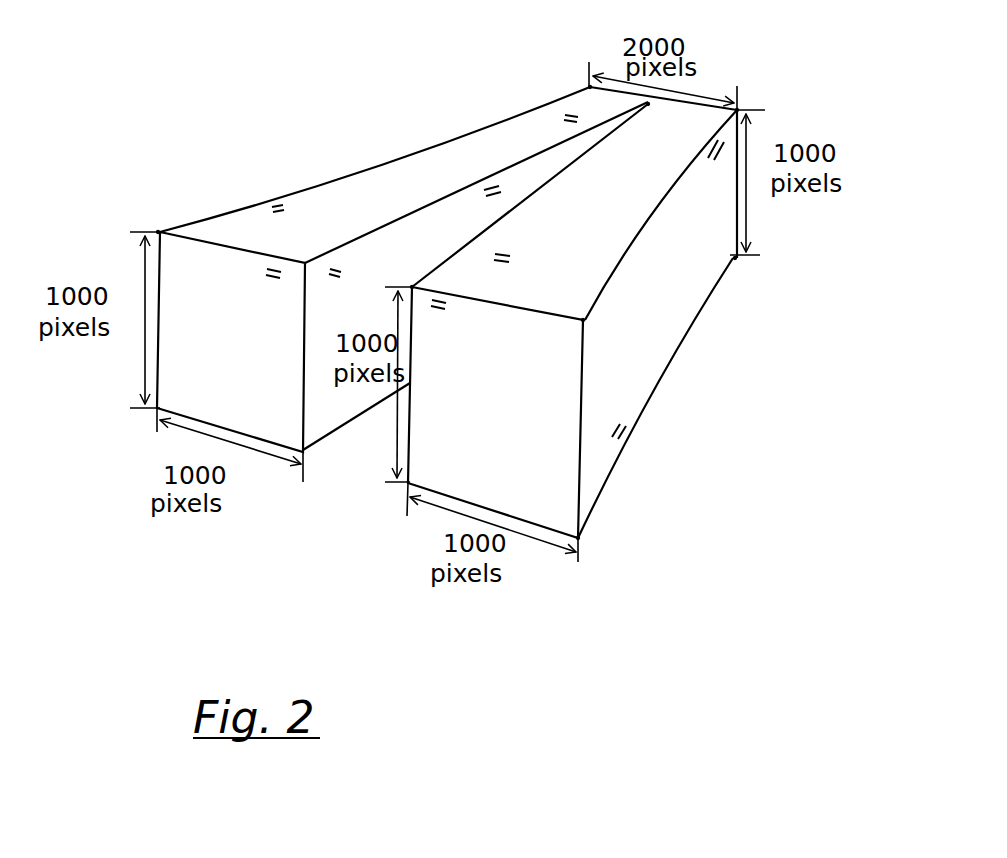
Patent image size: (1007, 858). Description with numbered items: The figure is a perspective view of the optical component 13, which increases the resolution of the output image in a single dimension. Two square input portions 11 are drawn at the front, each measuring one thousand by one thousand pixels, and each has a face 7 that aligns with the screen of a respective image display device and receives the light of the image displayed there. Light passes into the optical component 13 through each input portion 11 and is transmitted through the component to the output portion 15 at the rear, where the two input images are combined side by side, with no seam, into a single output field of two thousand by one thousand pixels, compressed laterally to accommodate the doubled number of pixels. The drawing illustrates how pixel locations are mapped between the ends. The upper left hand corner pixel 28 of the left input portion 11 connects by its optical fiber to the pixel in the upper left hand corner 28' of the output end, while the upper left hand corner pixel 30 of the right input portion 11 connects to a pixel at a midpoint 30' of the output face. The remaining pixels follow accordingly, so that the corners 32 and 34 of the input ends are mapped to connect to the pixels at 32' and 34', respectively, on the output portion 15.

The face 7 is at (233, 278).
The input portion 11 is at (205, 230).
The optical component 13 is at (388, 180).
The output portion 15 is at (726, 250).
The upper left hand corner pixel 28 is at (109, 205).
The upper left hand corner pixel 30 is at (468, 279).
The corner 32 is at (688, 351).
The corner 34 is at (642, 571).
The upper left hand corner pixel of output end 28' is at (544, 55).
The midpoint pixel of output face 30' is at (649, 144).
The output corner pixel 32' is at (794, 81).
The output corner pixel 34' is at (801, 270).